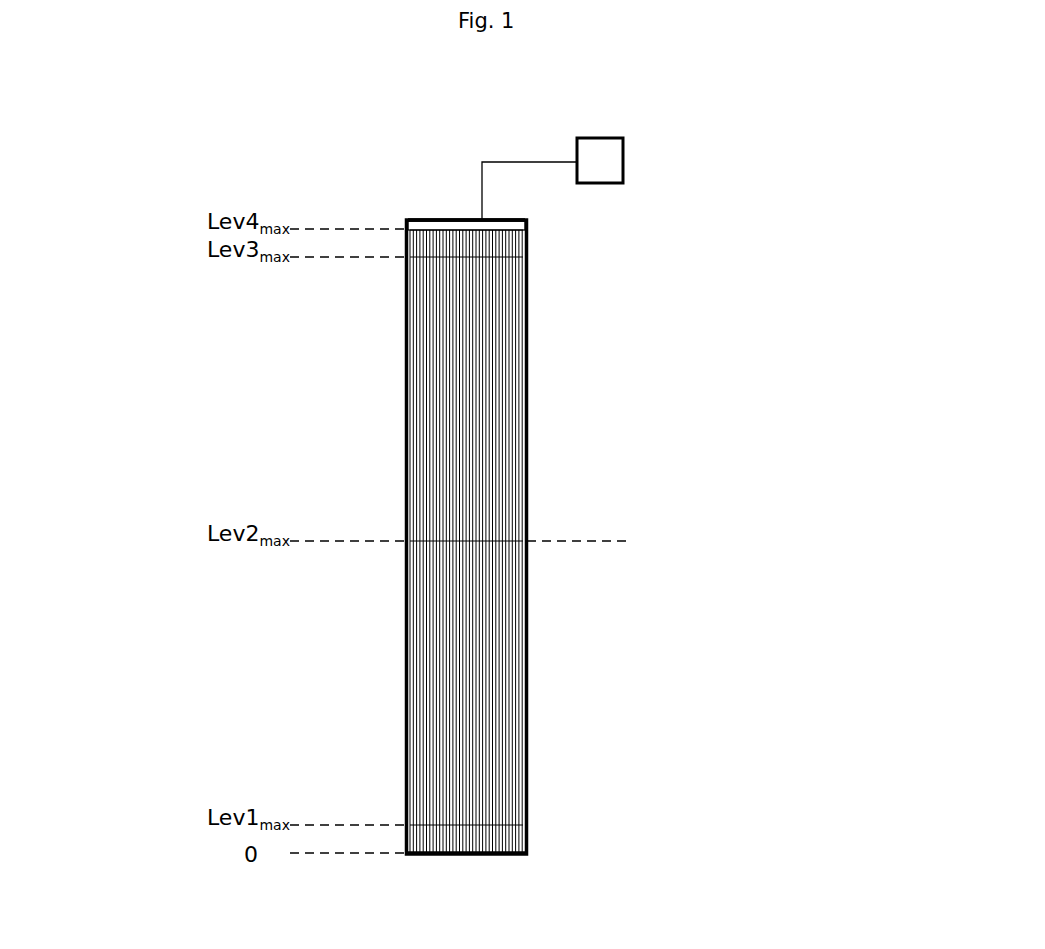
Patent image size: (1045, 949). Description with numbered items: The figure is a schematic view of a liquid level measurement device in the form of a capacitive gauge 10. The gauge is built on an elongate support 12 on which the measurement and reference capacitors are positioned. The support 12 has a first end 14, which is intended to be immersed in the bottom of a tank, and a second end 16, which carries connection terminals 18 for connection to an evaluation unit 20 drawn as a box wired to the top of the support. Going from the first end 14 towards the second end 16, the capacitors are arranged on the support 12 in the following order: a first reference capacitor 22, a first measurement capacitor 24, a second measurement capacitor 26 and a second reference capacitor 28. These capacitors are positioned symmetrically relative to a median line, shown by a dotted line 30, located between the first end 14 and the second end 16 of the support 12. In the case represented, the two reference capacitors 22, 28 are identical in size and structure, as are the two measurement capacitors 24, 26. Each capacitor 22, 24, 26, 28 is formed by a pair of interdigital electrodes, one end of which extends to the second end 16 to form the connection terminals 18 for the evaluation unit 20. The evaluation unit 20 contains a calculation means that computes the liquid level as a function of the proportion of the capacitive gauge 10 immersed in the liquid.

The capacitive gauge 10 is at (153, 296).
The support 12 is at (405, 428).
The first end 14 is at (430, 855).
The second end 16 is at (430, 219).
The connection terminals 18 is at (506, 220).
The evaluation unit 20 is at (608, 153).
The first reference capacitor 22 is at (505, 843).
The first measurement capacitor 24 is at (504, 660).
The second measurement capacitor 26 is at (504, 393).
The second reference capacitor 28 is at (505, 250).
The dotted line 30 is at (632, 540).